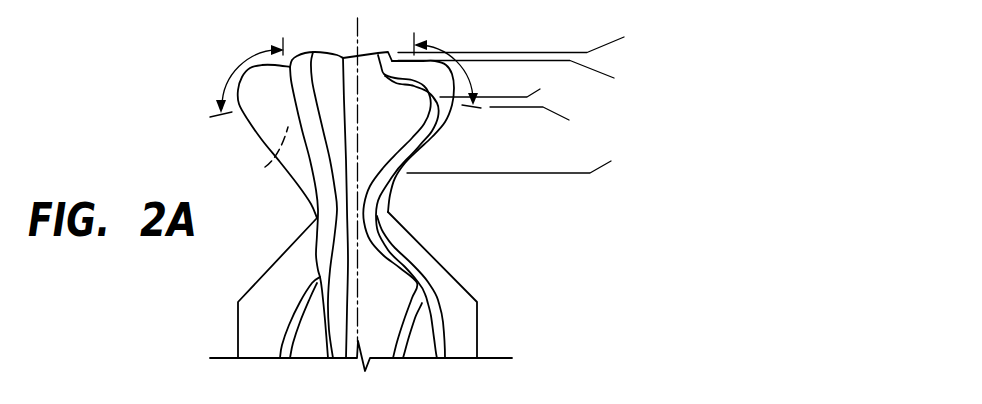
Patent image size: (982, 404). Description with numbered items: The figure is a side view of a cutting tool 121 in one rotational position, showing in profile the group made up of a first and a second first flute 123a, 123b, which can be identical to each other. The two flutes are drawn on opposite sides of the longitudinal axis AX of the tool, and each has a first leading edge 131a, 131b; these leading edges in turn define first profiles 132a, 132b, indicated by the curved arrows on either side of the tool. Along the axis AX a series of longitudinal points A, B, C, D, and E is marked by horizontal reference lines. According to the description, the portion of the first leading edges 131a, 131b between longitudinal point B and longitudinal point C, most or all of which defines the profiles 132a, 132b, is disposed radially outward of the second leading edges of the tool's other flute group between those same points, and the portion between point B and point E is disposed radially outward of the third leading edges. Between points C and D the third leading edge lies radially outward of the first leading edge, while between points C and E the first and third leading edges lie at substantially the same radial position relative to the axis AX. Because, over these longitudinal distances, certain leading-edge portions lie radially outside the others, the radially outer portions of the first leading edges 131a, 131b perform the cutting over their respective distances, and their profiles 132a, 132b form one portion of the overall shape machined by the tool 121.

The cutting tool 121 is at (365, 211).
The first first flute 123a is at (264, 163).
The second first flute 123b is at (424, 134).
The first leading edge 131a is at (240, 124).
The first leading edge 131b is at (450, 118).
The first profile 132a is at (233, 66).
The first profile 132b is at (445, 45).
The axis AX is at (353, 20).
The longitudinal point A is at (524, 35).
The longitudinal point B is at (519, 79).
The longitudinal point C is at (542, 123).
The longitudinal point D is at (522, 158).
The longitudinal point E is at (503, 82).